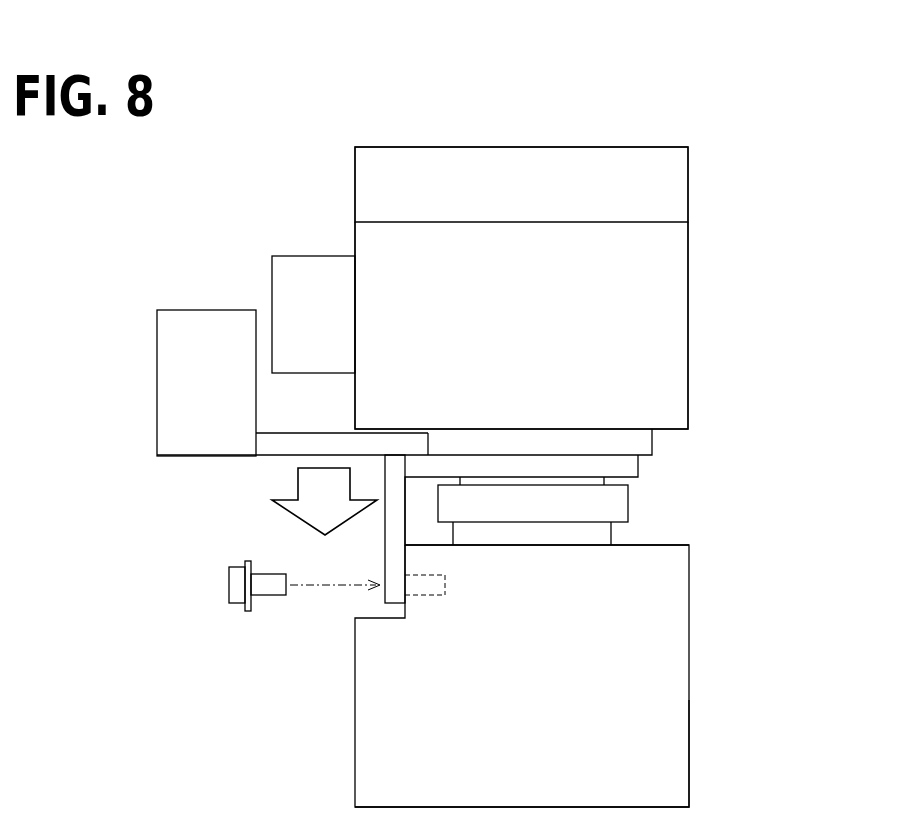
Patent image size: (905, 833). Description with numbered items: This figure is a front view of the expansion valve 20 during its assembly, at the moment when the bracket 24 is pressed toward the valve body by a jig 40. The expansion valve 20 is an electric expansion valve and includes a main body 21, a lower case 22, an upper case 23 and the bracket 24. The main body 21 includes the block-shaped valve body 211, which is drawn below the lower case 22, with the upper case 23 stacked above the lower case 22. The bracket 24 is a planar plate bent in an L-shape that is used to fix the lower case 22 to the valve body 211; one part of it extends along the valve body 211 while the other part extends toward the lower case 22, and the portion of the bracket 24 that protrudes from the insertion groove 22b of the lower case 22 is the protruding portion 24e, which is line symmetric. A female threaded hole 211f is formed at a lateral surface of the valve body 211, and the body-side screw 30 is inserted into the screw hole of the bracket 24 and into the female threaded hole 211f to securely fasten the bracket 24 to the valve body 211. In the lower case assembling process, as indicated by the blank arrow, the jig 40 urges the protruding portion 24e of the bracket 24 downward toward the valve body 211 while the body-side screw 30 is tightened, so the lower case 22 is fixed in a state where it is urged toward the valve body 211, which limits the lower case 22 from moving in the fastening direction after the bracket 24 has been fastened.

The expansion valve 20 is at (613, 118).
The main body 21 is at (690, 685).
The valve body 211 is at (690, 742).
The female threaded hole 211f is at (425, 605).
The lower case 22 is at (688, 315).
The insertion groove 22b is at (548, 468).
The upper case 23 is at (690, 182).
The bracket 24 is at (383, 540).
The protruding portion 24e is at (403, 455).
The body-side screw 30 is at (229, 588).
The jig 40 is at (157, 383).